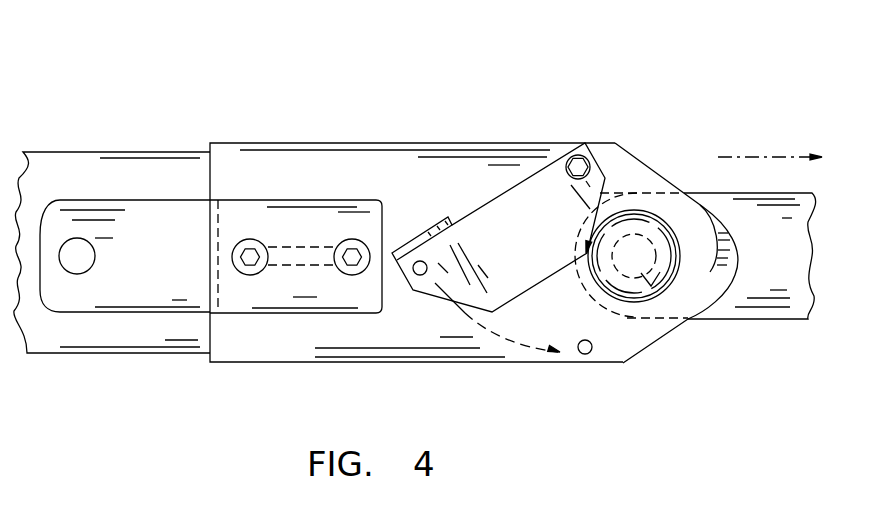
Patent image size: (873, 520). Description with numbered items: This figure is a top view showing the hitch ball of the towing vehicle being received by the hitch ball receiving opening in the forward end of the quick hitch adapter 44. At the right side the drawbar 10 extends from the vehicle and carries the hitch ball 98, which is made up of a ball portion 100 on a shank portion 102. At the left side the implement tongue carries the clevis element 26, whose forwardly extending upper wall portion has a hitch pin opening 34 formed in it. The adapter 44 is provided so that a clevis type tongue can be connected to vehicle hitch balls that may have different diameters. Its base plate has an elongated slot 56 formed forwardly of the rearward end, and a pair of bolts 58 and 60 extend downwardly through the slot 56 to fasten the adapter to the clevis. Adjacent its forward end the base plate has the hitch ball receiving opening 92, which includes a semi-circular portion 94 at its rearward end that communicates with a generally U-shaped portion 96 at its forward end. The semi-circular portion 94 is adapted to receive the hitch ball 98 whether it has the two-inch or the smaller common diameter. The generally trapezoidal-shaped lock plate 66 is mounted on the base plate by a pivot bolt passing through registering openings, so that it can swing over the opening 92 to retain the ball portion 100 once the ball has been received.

The drawbar 10 is at (763, 313).
The clevis element 26 is at (125, 303).
The hitch pin opening 34 is at (83, 257).
The quick hitch adapter 44 is at (433, 140).
The elongated slot 56 is at (297, 255).
The bolt 58 is at (243, 238).
The bolt 60 is at (353, 238).
The lock plate 66 is at (539, 200).
The hitch ball receiving opening 92 is at (700, 245).
The semi-circular portion 94 is at (610, 298).
The U-shaped portion 96 is at (700, 262).
The hitch ball 98 is at (670, 219).
The ball portion 100 is at (712, 236).
The shank portion 102 is at (660, 292).